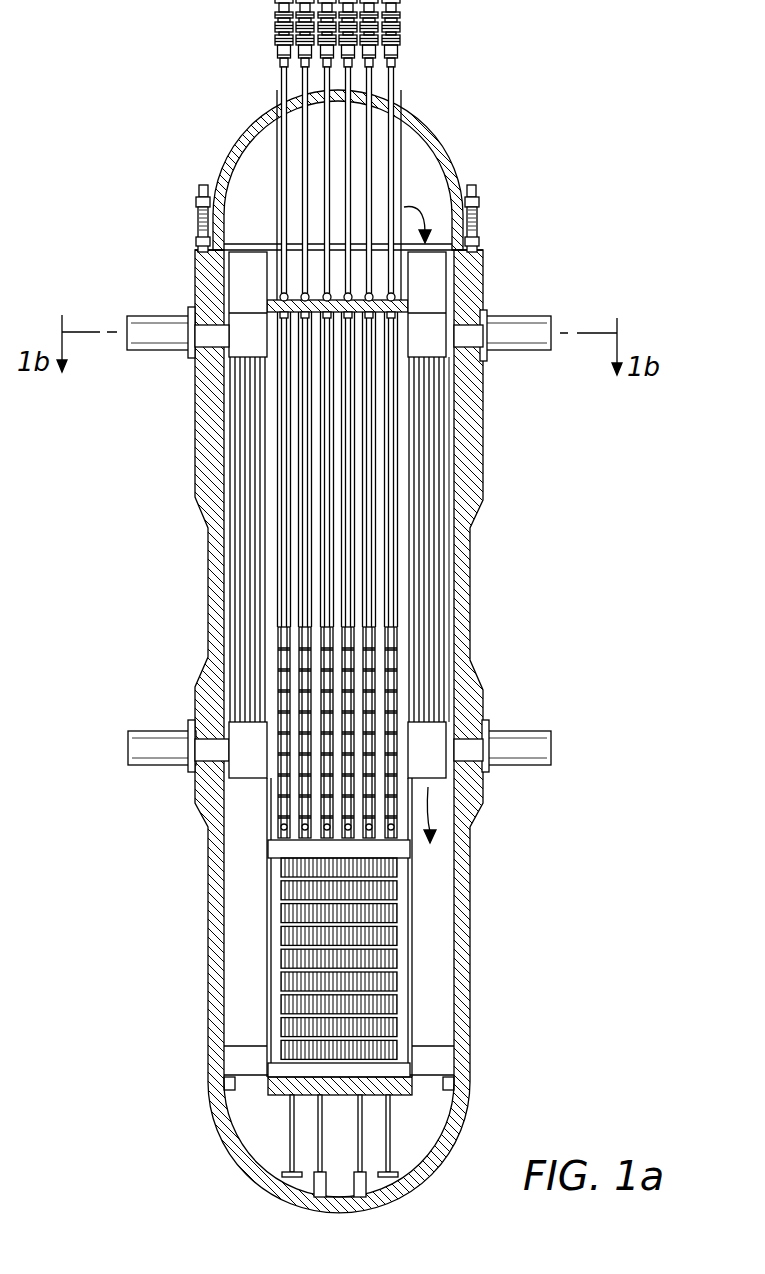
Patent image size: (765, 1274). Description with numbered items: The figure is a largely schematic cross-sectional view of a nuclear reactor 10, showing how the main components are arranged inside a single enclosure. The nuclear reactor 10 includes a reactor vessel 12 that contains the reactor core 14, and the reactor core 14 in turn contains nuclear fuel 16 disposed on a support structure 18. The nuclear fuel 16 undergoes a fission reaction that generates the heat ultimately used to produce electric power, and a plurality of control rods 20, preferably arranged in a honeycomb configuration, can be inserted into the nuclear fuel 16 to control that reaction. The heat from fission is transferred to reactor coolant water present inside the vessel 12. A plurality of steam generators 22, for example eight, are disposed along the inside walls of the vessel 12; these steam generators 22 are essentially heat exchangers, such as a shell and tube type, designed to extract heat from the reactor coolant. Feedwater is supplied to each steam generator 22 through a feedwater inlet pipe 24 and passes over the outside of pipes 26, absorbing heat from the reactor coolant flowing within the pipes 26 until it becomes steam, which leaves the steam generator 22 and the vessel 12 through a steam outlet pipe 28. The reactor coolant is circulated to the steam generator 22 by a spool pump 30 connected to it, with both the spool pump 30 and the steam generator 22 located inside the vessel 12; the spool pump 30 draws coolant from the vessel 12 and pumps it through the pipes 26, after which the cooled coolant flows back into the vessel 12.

The nuclear reactor 10 is at (568, 532).
The reactor vessel 12 is at (475, 447).
The reactor core 14 is at (392, 913).
The nuclear fuel 16 is at (388, 983).
The support structure 18 is at (398, 1095).
The control rods 20 is at (283, 585).
The steam generators 22 is at (447, 683).
The feedwater inlet pipe 24 is at (463, 750).
The pipes 26 is at (432, 583).
The steam outlet pipe 28 is at (463, 330).
The spool pump 30 is at (437, 277).